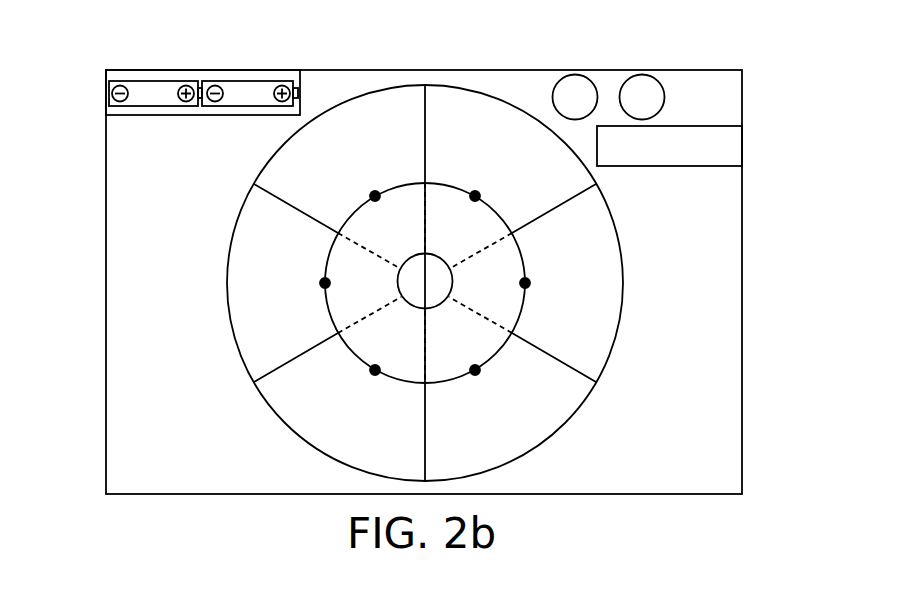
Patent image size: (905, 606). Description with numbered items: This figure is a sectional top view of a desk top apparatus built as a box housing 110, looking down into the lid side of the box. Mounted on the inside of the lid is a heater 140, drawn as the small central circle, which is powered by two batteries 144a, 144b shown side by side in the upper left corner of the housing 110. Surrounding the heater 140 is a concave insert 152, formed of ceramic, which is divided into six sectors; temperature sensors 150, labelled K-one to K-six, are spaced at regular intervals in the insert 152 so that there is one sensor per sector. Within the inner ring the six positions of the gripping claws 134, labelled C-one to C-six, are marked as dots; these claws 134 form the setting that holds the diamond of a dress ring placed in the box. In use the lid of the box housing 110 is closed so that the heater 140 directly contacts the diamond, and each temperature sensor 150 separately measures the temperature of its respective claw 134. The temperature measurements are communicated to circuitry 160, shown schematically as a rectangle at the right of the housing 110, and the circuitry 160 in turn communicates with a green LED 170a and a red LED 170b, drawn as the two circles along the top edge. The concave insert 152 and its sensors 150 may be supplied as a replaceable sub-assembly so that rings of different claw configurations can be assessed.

The box housing 110 is at (105, 415).
The gripping claws 134 is at (372, 194).
The heater 140 is at (392, 270).
The battery 144a is at (153, 80).
The battery 144b is at (249, 80).
The temperature sensors 150 is at (393, 97).
The concave insert 152 is at (459, 85).
The circuitry 160 is at (742, 146).
The green LED 170a is at (573, 68).
The red LED 170b is at (641, 68).